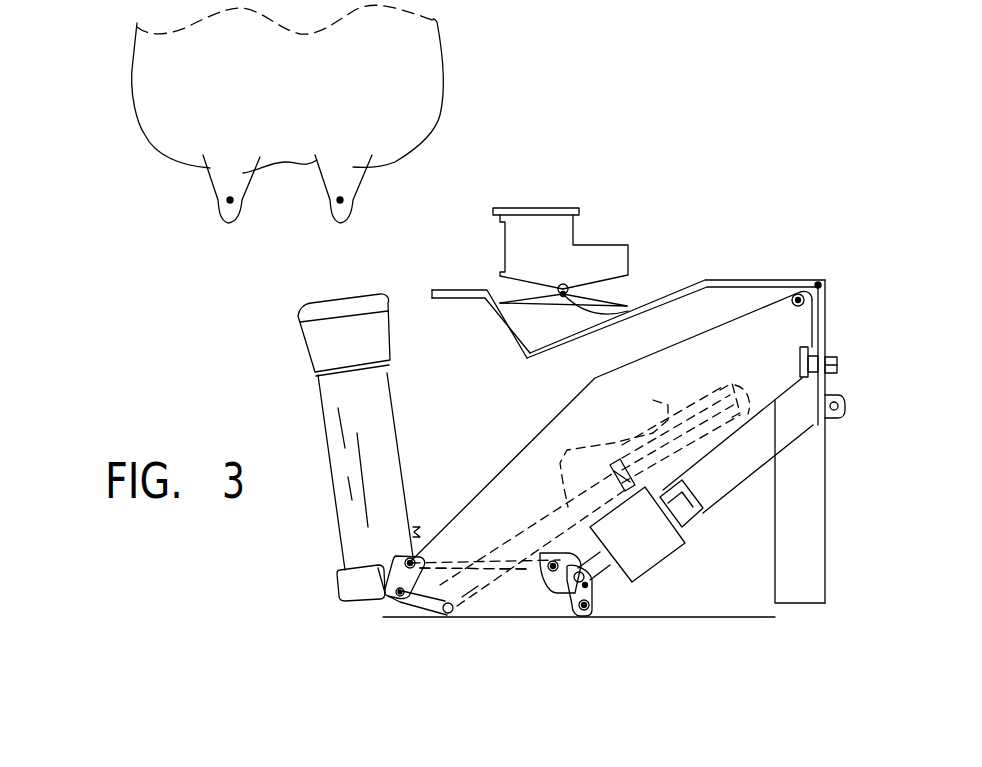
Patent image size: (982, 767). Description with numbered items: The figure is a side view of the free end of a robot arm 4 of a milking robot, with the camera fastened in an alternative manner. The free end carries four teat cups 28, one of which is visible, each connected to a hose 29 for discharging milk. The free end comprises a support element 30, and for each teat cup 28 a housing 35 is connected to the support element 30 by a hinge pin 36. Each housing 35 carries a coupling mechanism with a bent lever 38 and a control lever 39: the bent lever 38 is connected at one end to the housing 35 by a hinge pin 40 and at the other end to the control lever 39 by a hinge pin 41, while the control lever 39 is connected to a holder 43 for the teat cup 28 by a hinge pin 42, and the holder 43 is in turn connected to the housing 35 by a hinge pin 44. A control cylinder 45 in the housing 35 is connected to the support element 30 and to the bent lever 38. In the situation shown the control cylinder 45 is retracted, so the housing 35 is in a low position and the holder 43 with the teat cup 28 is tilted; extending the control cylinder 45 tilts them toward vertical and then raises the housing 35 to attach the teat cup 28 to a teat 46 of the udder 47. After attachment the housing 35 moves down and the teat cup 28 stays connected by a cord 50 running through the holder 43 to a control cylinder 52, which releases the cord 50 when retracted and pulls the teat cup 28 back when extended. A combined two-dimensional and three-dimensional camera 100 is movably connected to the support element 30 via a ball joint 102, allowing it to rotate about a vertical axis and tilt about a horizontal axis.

The robot arm 4 is at (703, 177).
The teat cup 28 is at (366, 417).
The hose 29 is at (410, 560).
The support element 30 is at (818, 285).
The housing 35 is at (550, 432).
The hinge pin 36 is at (798, 298).
The bent lever 38 is at (586, 586).
The control lever 39 is at (522, 569).
The hinge pin 40 is at (583, 608).
The hinge pin 41 is at (548, 570).
The hinge pin 42 is at (420, 552).
The holder 43 is at (345, 580).
The hinge pin 44 is at (398, 594).
The control cylinder 45 is at (652, 545).
The teat 46 is at (230, 200).
The udder 47 is at (155, 87).
The cord 50 is at (425, 607).
The control cylinder 52 is at (655, 415).
The 2D/3D camera 100 is at (616, 227).
The ball joint 102 is at (631, 307).